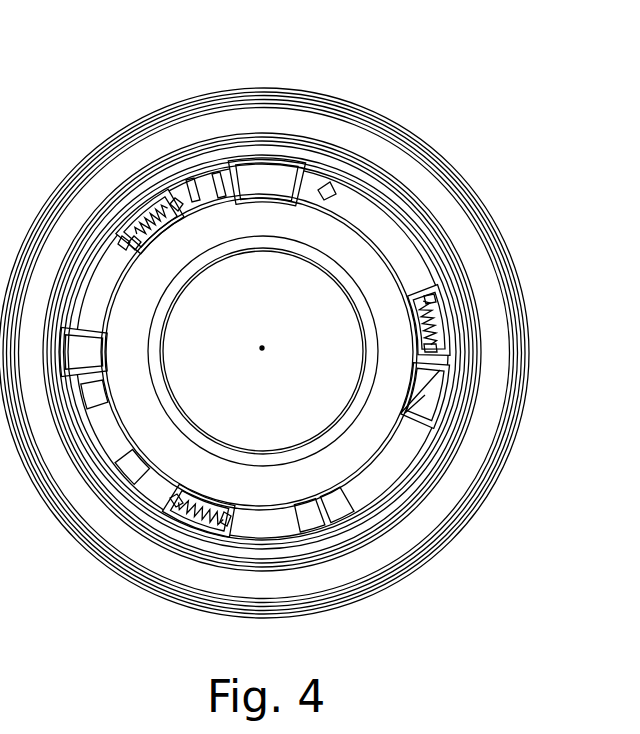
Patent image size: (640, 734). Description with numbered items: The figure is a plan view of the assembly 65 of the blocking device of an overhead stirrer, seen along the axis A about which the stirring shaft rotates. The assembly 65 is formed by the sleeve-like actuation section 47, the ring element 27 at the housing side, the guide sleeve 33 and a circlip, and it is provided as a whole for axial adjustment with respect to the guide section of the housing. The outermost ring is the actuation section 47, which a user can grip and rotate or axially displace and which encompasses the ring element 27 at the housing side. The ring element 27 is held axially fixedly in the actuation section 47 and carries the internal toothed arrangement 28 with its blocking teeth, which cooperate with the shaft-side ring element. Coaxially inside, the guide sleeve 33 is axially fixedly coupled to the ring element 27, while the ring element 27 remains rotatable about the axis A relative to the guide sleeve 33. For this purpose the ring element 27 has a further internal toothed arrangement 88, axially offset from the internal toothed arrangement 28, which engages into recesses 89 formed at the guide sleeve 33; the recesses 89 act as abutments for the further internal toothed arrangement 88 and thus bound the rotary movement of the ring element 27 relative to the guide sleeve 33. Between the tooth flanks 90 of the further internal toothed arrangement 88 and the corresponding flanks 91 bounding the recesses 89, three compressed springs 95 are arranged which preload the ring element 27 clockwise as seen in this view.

The ring element at the housing side 27 is at (288, 158).
The internal toothed arrangement 28 is at (190, 190).
The guide sleeve 33 is at (370, 265).
The actuation section 47 is at (474, 214).
The assembly 65 is at (572, 253).
The further internal toothed arrangement 88 is at (223, 185).
The recesses 89 is at (140, 215).
The tooth flanks 90 is at (170, 238).
The flanks 91 is at (158, 242).
The compressed springs 95 is at (150, 215).
The axis A is at (276, 354).